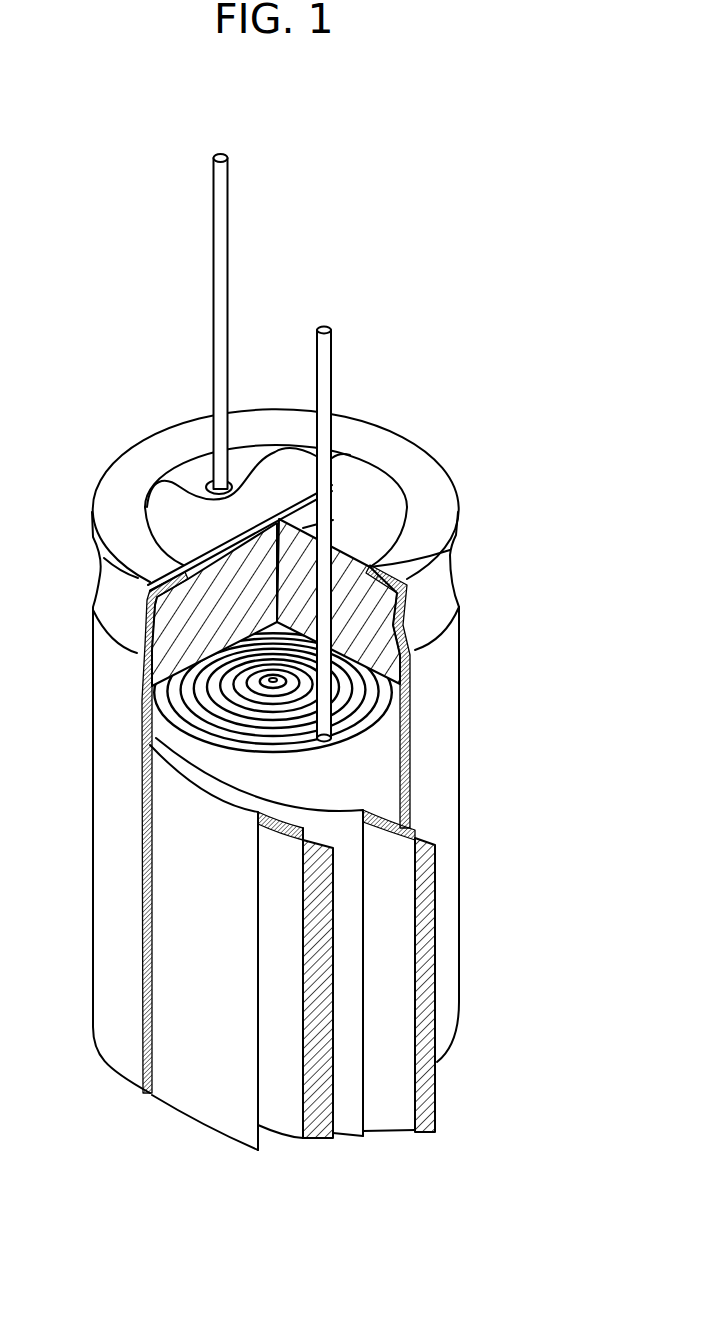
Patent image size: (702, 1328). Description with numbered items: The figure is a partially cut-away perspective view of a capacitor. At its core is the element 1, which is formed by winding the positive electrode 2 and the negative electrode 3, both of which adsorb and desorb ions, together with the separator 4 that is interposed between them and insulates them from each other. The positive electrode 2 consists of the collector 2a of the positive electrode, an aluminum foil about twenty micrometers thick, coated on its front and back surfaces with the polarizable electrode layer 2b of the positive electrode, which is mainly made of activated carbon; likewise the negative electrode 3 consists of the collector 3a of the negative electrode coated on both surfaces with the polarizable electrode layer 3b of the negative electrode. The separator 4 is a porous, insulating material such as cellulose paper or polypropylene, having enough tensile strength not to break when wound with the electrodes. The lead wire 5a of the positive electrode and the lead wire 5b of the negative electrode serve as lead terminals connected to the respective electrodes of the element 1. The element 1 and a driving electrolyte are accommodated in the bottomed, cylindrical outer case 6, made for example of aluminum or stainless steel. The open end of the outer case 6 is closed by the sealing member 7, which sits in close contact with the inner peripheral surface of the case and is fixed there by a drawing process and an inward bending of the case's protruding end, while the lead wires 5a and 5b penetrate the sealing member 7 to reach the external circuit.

The element 1 is at (230, 717).
The positive electrode 2 is at (464, 971).
The collector of the positive electrode 2a is at (425, 860).
The polarizable electrode layer of the positive electrode 2b is at (400, 908).
The negative electrode 3 is at (411, 975).
The collector of the negative electrode 3a is at (323, 960).
The polarizable electrode layer of the negative electrode 3b is at (287, 996).
The separator 4 is at (350, 1122).
The lead wire of the positive electrode 5a is at (218, 273).
The lead wire of the negative electrode 5b is at (325, 353).
The outer case 6 is at (447, 643).
The sealing member 7 is at (386, 652).